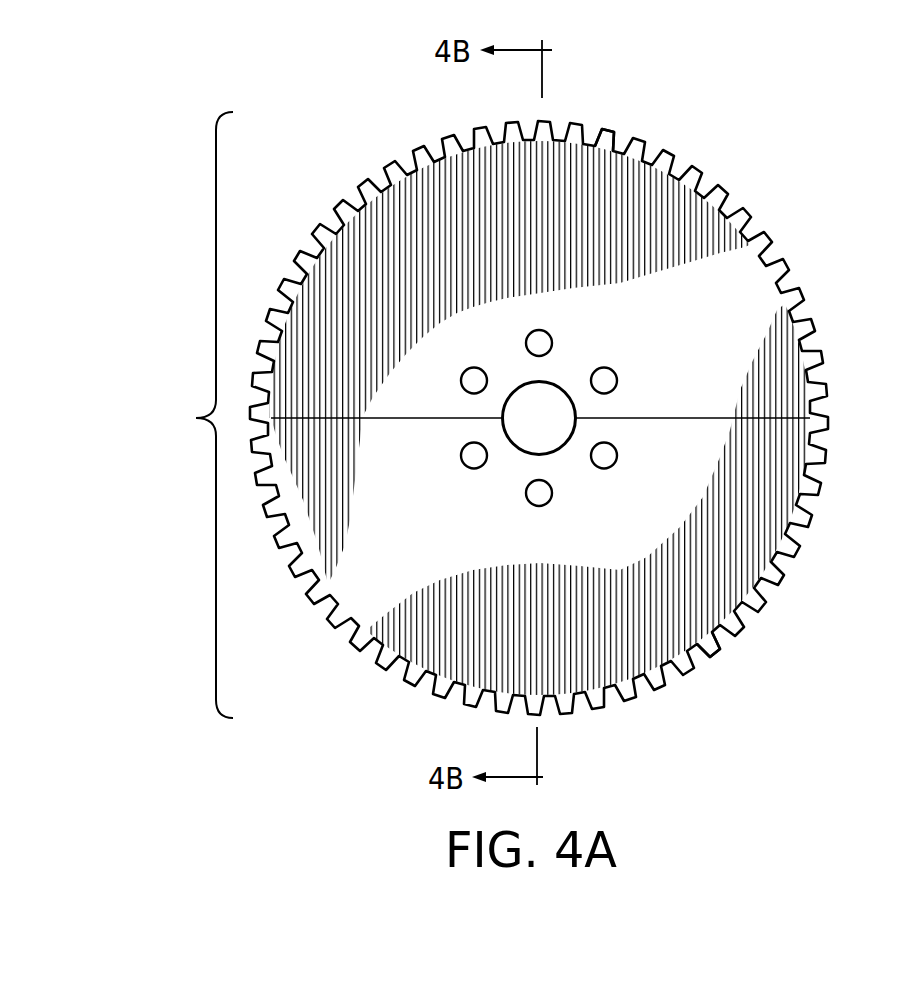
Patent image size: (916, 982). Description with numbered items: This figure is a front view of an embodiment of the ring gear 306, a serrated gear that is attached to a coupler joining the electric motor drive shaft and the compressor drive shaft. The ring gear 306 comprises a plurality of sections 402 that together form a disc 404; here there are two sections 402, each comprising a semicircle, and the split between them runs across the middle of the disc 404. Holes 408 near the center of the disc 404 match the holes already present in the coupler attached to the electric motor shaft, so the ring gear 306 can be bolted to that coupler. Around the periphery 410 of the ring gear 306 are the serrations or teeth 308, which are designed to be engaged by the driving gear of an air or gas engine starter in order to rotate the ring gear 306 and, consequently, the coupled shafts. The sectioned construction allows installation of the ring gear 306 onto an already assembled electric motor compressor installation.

The ring gear 306 is at (373, 123).
The teeth 308 is at (605, 135).
The sections 402 is at (727, 353).
The disc 404 is at (186, 415).
The holes 408 is at (472, 459).
The periphery 410 is at (708, 657).